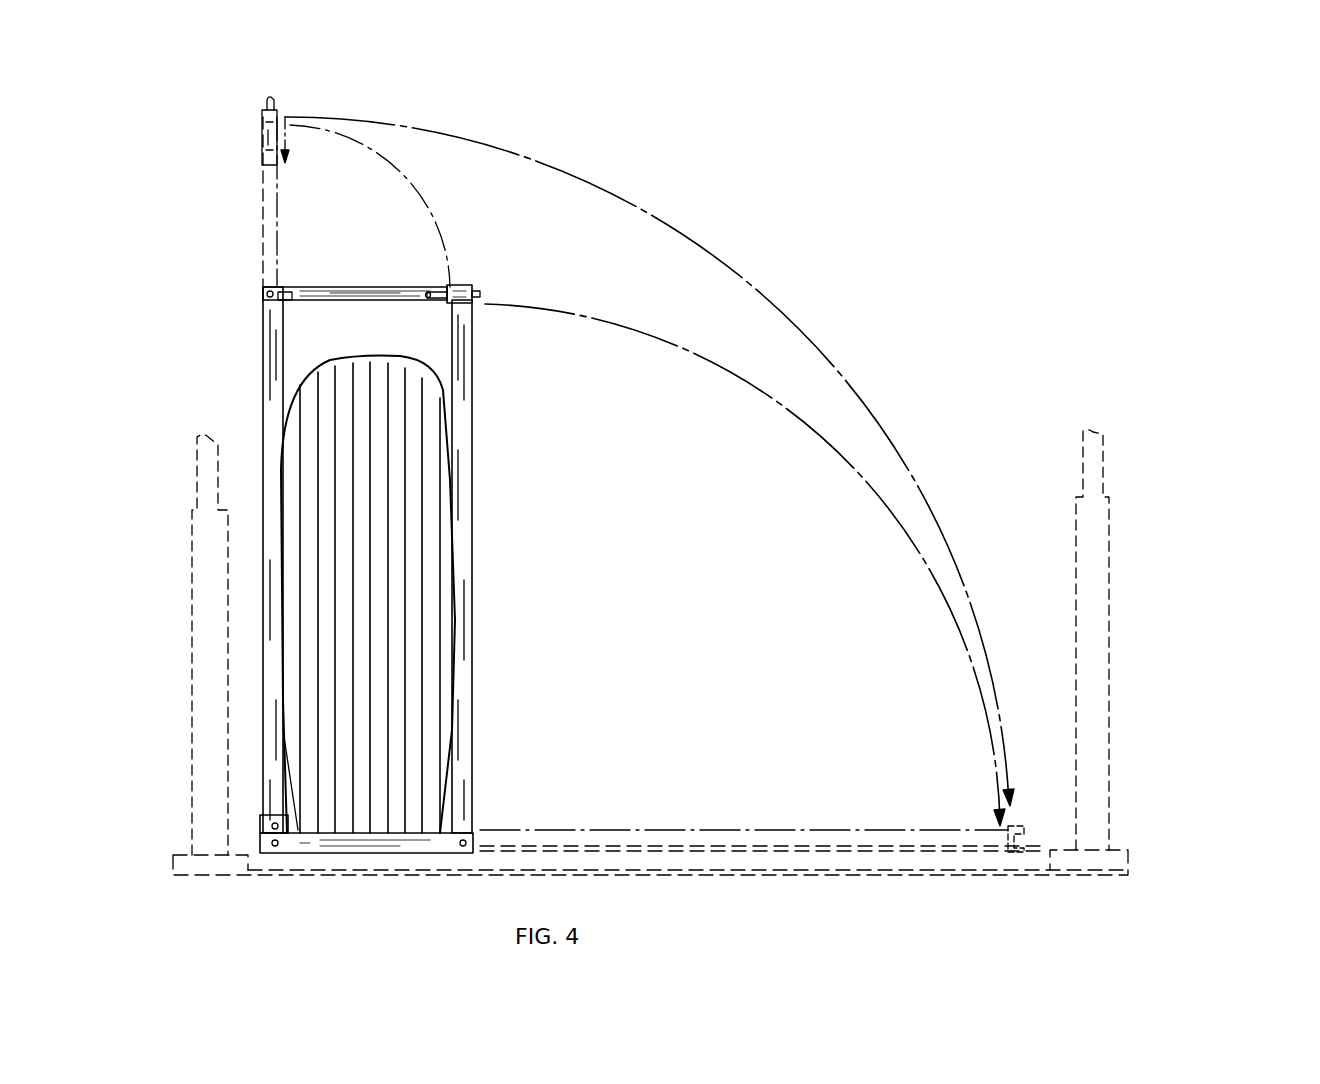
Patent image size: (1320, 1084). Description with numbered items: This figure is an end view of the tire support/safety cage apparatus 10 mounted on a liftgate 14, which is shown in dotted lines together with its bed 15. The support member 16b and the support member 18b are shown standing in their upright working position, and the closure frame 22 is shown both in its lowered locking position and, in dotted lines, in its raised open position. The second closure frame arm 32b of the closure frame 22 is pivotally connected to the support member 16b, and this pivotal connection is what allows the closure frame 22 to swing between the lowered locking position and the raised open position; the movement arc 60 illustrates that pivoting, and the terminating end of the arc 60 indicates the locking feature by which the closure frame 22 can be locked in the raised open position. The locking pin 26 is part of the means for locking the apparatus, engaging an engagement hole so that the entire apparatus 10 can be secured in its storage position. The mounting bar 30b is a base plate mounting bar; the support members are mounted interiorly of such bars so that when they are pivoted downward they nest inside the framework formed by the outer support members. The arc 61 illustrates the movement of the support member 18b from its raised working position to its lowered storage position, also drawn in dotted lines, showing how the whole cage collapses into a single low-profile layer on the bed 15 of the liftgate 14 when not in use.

The apparatus 10 is at (572, 502).
The liftgate 14 is at (1135, 576).
The bed 15 is at (968, 838).
The second support member 16b is at (272, 347).
The support member 18b is at (468, 515).
The closure frame 22 is at (258, 160).
The locking pin 26 is at (282, 95).
The mounting bar 30b is at (385, 845).
The second closure frame arm 32b is at (318, 243).
The movement arc 60 is at (417, 183).
The arc 61 is at (810, 427).